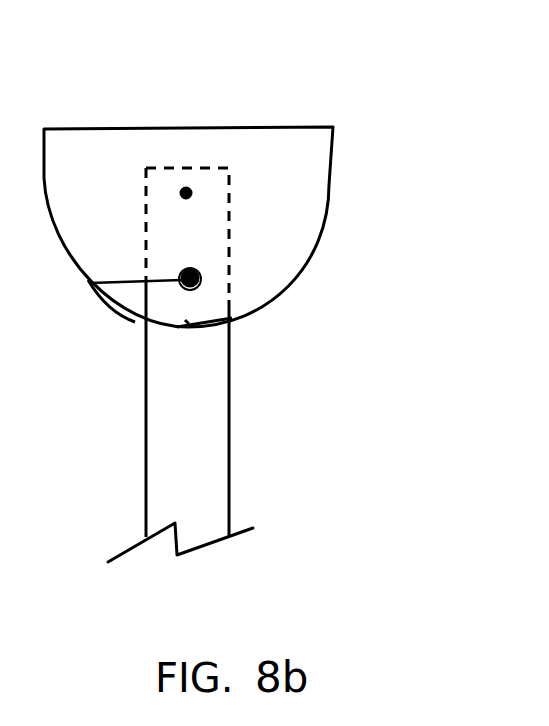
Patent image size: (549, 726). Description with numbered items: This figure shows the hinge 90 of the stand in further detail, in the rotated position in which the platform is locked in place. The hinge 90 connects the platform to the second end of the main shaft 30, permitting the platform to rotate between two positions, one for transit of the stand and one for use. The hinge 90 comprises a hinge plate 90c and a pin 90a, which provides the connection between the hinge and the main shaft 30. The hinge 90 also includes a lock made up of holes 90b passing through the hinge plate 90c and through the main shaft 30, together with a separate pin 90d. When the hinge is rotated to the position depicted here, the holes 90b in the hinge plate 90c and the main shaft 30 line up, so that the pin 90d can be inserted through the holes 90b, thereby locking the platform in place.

The hinge 90 is at (383, 164).
The pin 90a is at (186, 193).
The holes 90b is at (201, 285).
The hinge plate 90c is at (110, 298).
The pin 90d is at (90, 283).
The main shaft 30 is at (218, 480).